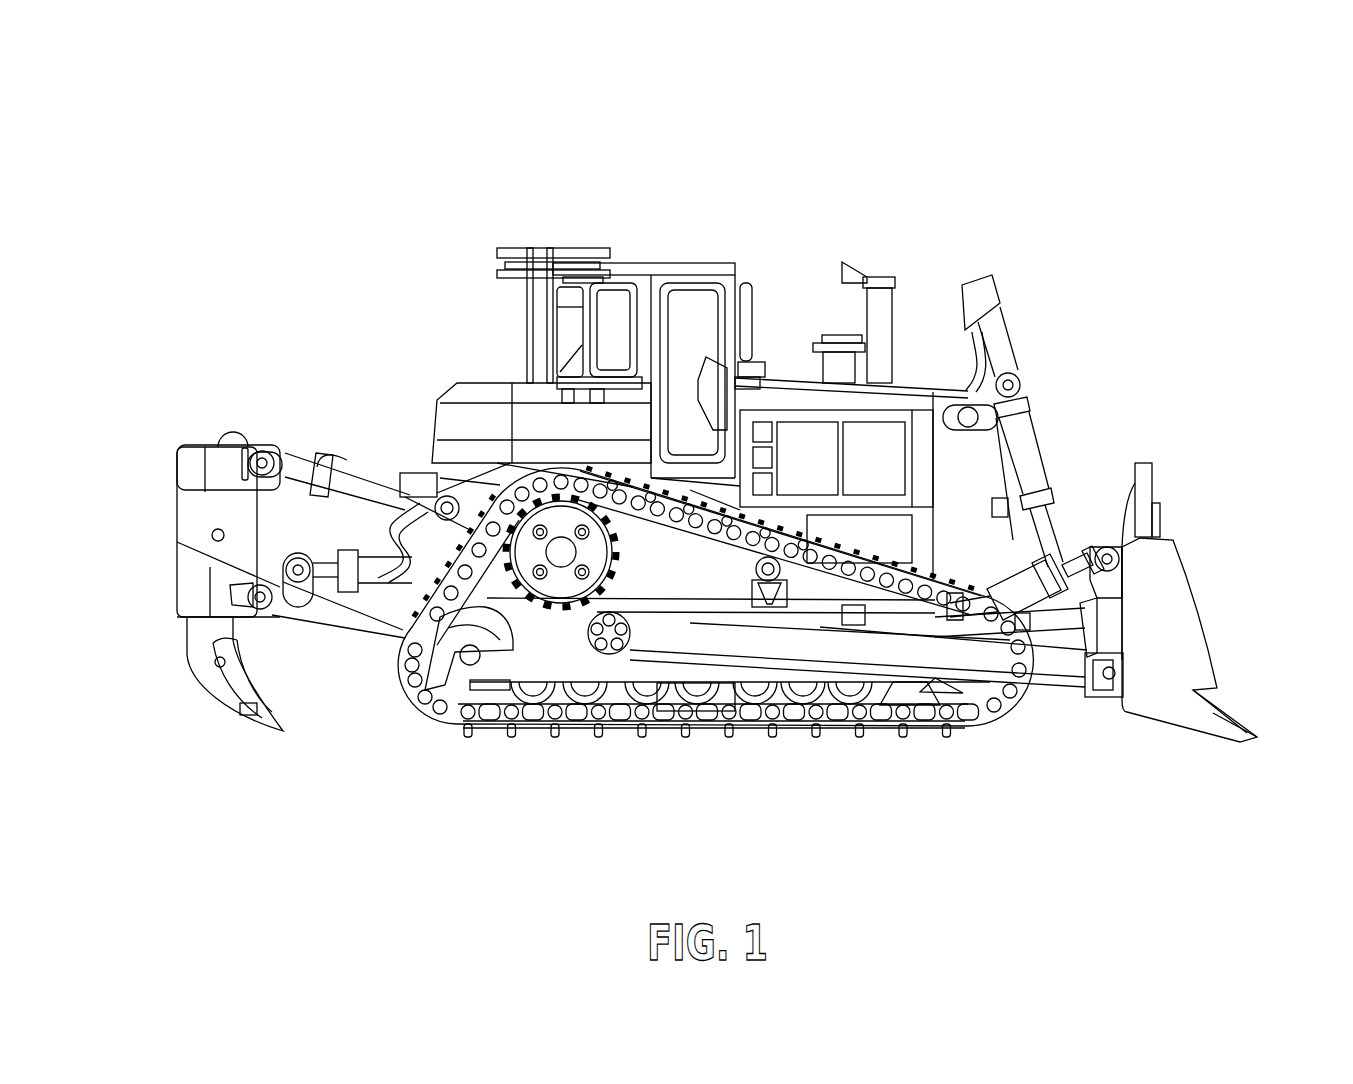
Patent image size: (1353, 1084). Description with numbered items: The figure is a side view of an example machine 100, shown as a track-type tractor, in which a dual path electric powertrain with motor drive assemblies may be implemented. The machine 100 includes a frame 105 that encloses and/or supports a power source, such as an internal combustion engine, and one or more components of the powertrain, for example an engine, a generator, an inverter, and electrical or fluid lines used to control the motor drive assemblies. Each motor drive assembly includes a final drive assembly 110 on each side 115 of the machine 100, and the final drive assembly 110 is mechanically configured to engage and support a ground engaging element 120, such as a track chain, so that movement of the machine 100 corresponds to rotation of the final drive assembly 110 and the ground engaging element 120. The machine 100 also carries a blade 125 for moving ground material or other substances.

The machine 100 is at (195, 64).
The frame 105 is at (722, 582).
The final drive assembly 110 is at (555, 587).
The side 115 is at (640, 560).
The ground engaging element 120 is at (408, 510).
The blade 125 is at (1176, 607).